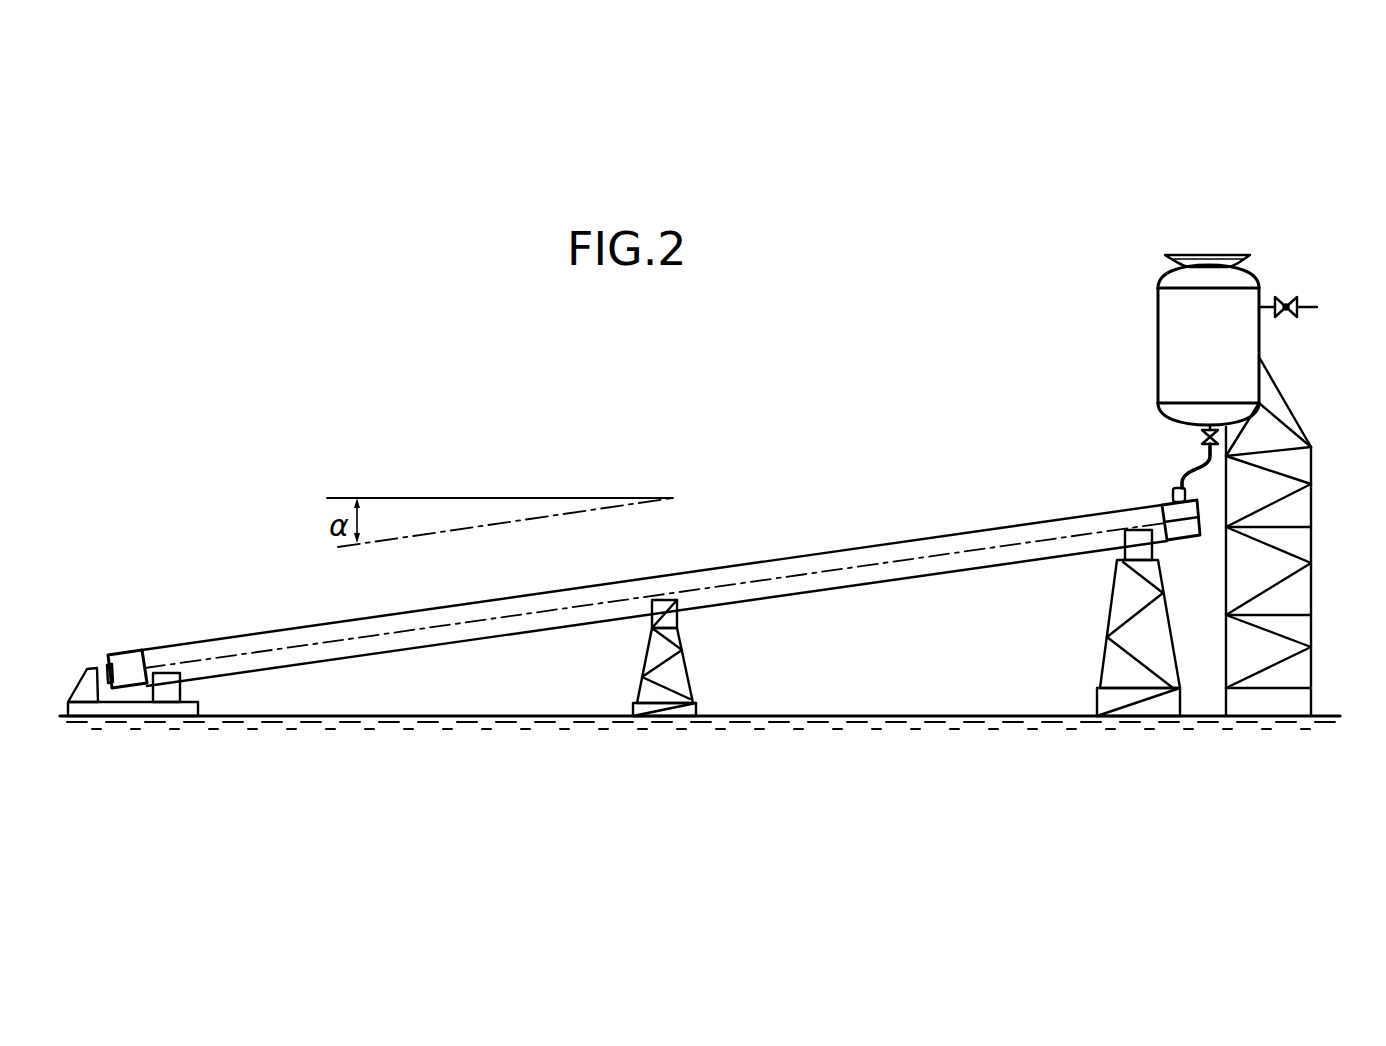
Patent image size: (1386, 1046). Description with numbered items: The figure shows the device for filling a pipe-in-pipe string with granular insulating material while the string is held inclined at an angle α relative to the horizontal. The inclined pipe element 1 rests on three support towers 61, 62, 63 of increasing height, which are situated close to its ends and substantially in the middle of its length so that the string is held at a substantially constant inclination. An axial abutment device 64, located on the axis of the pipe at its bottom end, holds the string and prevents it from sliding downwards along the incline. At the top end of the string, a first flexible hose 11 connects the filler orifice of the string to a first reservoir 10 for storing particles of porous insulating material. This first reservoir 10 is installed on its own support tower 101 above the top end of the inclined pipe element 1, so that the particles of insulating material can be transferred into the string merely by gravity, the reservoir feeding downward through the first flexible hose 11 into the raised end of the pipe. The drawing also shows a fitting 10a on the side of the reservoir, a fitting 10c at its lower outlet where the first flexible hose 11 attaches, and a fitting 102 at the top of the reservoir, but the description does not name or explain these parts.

The inclined pipe element 1 is at (815, 534).
The first reservoir 10 is at (1158, 325).
The tank side valve 10a is at (1287, 317).
The tank bottom valve 10c is at (1202, 437).
The first flexible hose 11 is at (1180, 481).
The support tower 61 is at (181, 689).
The support tower 62 is at (690, 647).
The support tower 63 is at (1106, 631).
The axial abutment device 64 is at (78, 692).
The support tower 101 is at (1312, 566).
The tank top flange 102 is at (1213, 255).